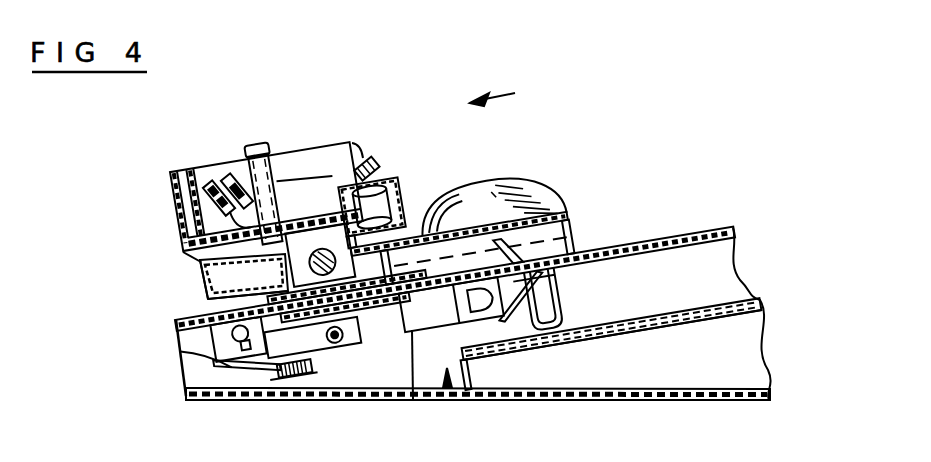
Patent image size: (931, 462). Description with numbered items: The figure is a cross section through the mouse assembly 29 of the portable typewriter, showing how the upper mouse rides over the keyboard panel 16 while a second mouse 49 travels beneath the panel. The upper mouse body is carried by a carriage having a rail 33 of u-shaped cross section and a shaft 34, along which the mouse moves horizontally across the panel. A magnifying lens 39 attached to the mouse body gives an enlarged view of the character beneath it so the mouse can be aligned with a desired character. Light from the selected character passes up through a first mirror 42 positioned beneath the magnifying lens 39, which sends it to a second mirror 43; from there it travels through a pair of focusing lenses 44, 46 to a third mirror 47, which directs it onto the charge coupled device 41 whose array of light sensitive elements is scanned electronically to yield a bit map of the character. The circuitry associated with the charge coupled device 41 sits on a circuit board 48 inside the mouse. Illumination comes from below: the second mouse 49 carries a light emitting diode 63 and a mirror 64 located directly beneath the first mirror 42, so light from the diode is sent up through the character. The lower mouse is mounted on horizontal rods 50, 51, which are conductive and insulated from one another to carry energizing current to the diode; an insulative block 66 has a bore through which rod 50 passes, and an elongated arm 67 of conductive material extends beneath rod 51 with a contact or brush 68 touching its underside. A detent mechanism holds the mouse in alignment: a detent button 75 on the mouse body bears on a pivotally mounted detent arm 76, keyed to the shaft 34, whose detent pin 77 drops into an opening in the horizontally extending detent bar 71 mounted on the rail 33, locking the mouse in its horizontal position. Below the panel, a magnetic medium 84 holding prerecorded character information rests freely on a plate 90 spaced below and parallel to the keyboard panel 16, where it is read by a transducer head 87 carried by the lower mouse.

The keyboard panel 16 is at (687, 230).
The mouse assembly 29 is at (514, 90).
The rail 33 is at (244, 276).
The shaft 34 is at (318, 235).
The magnifying lens 39 is at (520, 202).
The charge coupled device 41 is at (233, 177).
The first mirror 42 is at (497, 205).
The second mirror 43 is at (451, 304).
The focusing lens 44 is at (395, 183).
The focusing lens 46 is at (380, 180).
The third mirror 47 is at (362, 152).
The circuit board 48 is at (168, 195).
The second mouse 49 is at (457, 397).
The rod 50 is at (238, 339).
The rod 51 is at (340, 343).
The light emitting diode 63 is at (413, 400).
The mirror 64 is at (518, 354).
The insulative block 66 is at (316, 345).
The elongated arm 67 is at (231, 370).
The contact or brush 68 is at (181, 352).
The detent bar 71 is at (210, 296).
The detent button 75 is at (257, 148).
The detent arm 76 is at (195, 260).
The detent pin 77 is at (200, 278).
The magnetic medium 84 is at (717, 307).
The transducer head 87 is at (567, 303).
The plate 90 is at (627, 337).